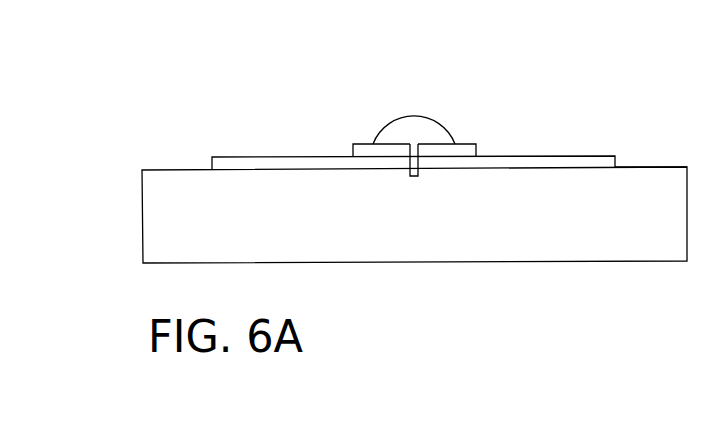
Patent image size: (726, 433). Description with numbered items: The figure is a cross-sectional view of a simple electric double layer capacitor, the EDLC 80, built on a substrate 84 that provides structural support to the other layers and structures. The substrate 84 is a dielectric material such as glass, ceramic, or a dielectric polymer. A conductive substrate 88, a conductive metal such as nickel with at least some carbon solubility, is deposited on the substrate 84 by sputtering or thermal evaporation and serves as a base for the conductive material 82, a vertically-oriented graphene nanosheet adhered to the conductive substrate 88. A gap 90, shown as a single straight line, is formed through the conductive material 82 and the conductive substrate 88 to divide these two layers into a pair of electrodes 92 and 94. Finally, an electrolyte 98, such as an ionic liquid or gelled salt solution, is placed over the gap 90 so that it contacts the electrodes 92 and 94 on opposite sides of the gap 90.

The EDLC 80 is at (136, 141).
The conductive material 82 is at (345, 134).
The substrate 84 is at (515, 262).
The conductive substrate 88 is at (596, 144).
The gap 90 is at (413, 157).
The electrode 92 is at (360, 95).
The electrode 94 is at (516, 109).
The electrolyte 98 is at (437, 118).